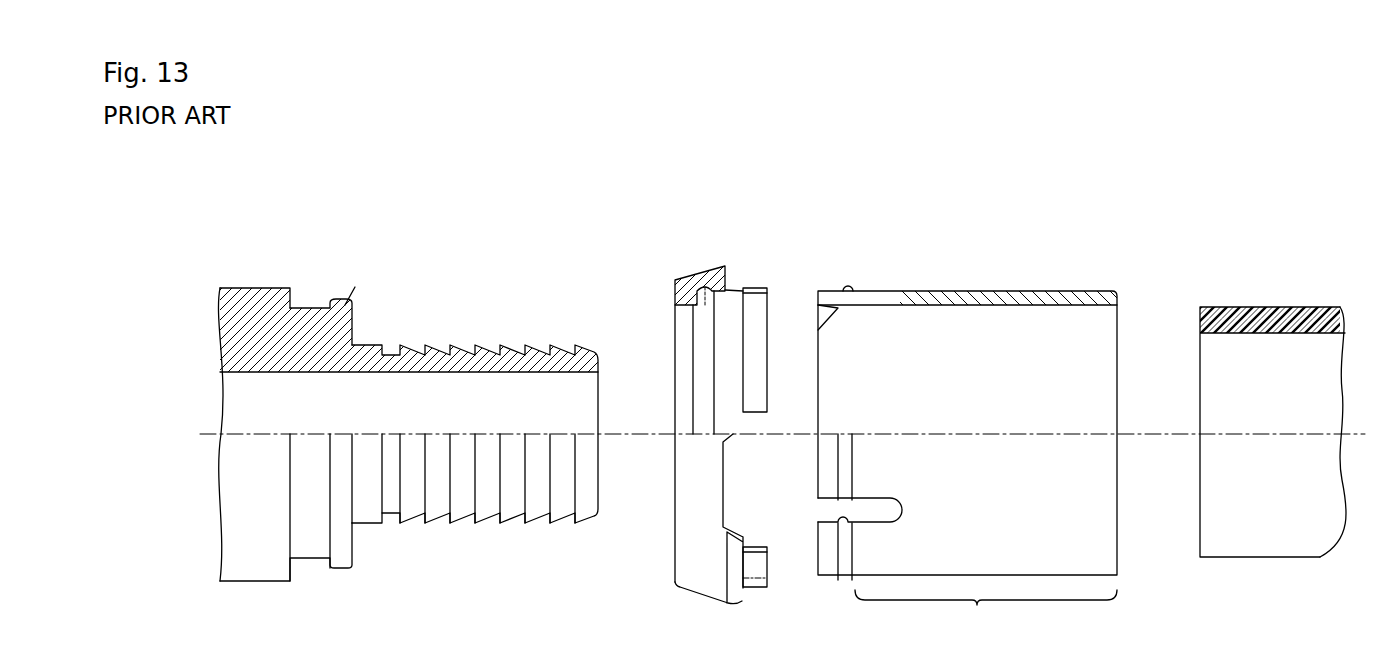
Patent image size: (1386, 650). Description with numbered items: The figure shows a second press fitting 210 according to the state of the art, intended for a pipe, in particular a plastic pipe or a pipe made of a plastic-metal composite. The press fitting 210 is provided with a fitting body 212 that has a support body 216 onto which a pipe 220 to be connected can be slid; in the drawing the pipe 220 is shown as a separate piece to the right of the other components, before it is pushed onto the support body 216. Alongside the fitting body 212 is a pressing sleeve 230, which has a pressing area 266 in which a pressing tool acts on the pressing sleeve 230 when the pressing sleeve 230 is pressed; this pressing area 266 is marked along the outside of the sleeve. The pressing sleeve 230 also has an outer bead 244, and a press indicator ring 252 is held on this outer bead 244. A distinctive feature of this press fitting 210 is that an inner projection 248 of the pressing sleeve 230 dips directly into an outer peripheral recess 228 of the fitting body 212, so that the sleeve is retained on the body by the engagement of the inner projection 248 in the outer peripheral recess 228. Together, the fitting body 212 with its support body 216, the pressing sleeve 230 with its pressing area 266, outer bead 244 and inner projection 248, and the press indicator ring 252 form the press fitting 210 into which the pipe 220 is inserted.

The press fitting 210 is at (862, 358).
The fitting body 212 is at (408, 361).
The support body 216 is at (537, 358).
The pipe 220 is at (1285, 322).
The outer peripheral recess 228 is at (310, 305).
The pressing sleeve 230 is at (944, 422).
The outer bead 244 is at (845, 287).
The inner projection 248 is at (833, 308).
The press indicator ring 252 is at (675, 288).
The pressing area 266 is at (986, 614).